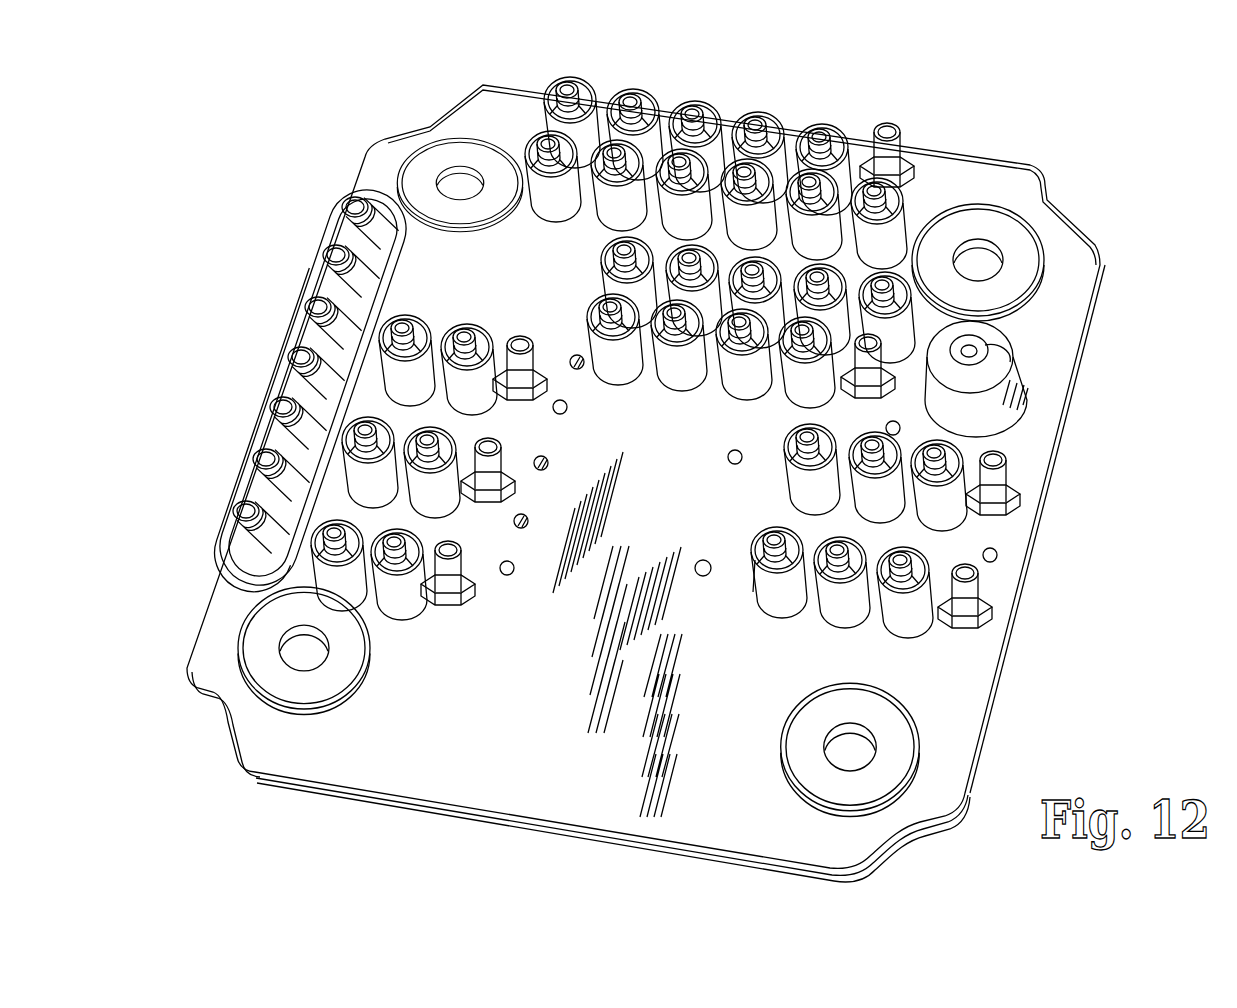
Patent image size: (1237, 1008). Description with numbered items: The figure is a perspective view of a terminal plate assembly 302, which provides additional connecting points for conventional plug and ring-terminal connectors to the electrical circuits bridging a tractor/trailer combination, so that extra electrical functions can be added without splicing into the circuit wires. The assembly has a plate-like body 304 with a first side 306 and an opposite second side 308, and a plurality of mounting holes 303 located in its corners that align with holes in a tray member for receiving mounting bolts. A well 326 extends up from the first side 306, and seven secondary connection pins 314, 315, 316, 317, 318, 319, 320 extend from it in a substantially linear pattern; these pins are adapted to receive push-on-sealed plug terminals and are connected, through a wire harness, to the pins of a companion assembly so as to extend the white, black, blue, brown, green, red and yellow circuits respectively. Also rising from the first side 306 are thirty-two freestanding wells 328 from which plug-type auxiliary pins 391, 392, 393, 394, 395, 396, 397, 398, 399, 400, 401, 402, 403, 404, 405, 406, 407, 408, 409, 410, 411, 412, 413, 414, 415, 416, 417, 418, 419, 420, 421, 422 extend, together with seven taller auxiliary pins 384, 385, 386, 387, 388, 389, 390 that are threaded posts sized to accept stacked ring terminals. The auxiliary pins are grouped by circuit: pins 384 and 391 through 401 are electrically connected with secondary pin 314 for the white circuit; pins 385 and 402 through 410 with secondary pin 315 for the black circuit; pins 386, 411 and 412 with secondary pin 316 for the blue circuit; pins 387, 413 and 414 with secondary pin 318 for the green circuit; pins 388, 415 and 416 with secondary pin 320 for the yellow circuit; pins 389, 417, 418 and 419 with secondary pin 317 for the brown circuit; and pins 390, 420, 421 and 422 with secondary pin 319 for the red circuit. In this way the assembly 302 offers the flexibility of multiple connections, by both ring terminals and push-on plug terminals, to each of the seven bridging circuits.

The terminal plate assembly 302 is at (1128, 137).
The mounting holes 303 is at (458, 180).
The plate-like body 304 is at (990, 705).
The first side 306 is at (968, 680).
The second side 308 is at (935, 830).
The secondary connection pin 314 is at (355, 207).
The secondary connection pin 315 is at (336, 255).
The secondary connection pin 316 is at (318, 307).
The secondary connection pin 317 is at (301, 357).
The secondary connection pin 318 is at (283, 407).
The secondary connection pin 319 is at (266, 459).
The secondary connection pin 320 is at (246, 511).
The well 326 is at (240, 568).
The freestanding wells 328 is at (765, 588).
The auxiliary pin 384 is at (888, 131).
The auxiliary pin 385 is at (880, 382).
The auxiliary pin 386 is at (523, 345).
The auxiliary pin 387 is at (513, 437).
The auxiliary pin 388 is at (482, 545).
The auxiliary pin 389 is at (1005, 468).
The auxiliary pin 390 is at (975, 598).
The auxiliary pin 391 is at (567, 88).
The auxiliary pin 392 is at (630, 100).
The auxiliary pin 393 is at (692, 112).
The auxiliary pin 394 is at (755, 123).
The auxiliary pin 395 is at (819, 135).
The auxiliary pin 396 is at (553, 176).
The auxiliary pin 397 is at (619, 185).
The auxiliary pin 398 is at (684, 194).
The auxiliary pin 399 is at (749, 204).
The auxiliary pin 400 is at (814, 214).
The auxiliary pin 401 is at (879, 223).
The auxiliary pin 402 is at (627, 258).
The auxiliary pin 403 is at (691, 266).
The auxiliary pin 404 is at (753, 277).
The auxiliary pin 405 is at (818, 284).
The auxiliary pin 406 is at (883, 292).
The auxiliary pin 407 is at (618, 360).
The auxiliary pin 408 is at (680, 368).
The auxiliary pin 409 is at (744, 376).
The auxiliary pin 410 is at (812, 384).
The auxiliary pin 411 is at (408, 330).
The auxiliary pin 412 is at (470, 340).
The auxiliary pin 413 is at (402, 409).
The auxiliary pin 414 is at (460, 419).
The auxiliary pin 415 is at (338, 535).
The auxiliary pin 416 is at (398, 545).
The auxiliary pin 417 is at (812, 469).
The auxiliary pin 418 is at (877, 477).
The auxiliary pin 419 is at (939, 485).
The auxiliary pin 420 is at (775, 545).
The auxiliary pin 421 is at (838, 553).
The auxiliary pin 422 is at (901, 565).